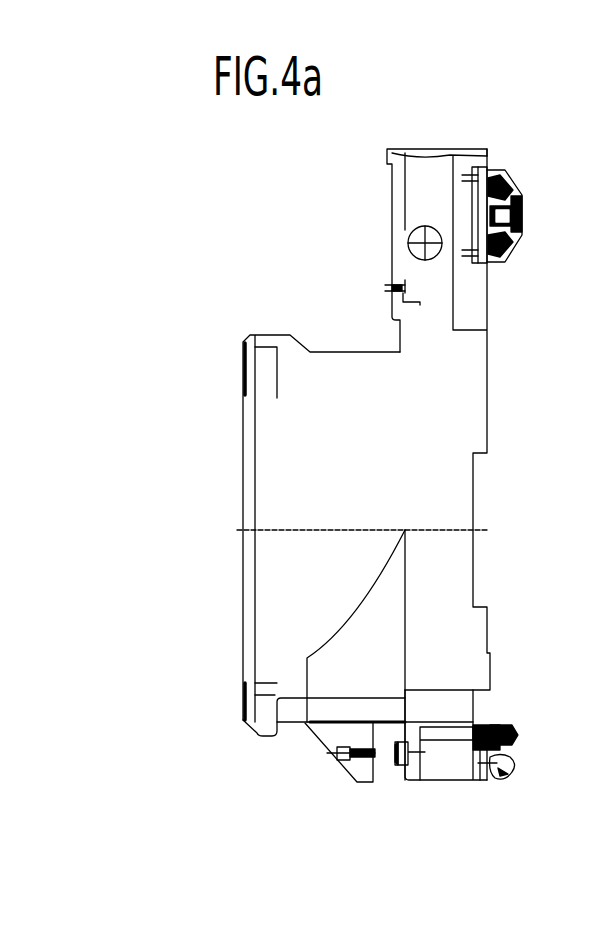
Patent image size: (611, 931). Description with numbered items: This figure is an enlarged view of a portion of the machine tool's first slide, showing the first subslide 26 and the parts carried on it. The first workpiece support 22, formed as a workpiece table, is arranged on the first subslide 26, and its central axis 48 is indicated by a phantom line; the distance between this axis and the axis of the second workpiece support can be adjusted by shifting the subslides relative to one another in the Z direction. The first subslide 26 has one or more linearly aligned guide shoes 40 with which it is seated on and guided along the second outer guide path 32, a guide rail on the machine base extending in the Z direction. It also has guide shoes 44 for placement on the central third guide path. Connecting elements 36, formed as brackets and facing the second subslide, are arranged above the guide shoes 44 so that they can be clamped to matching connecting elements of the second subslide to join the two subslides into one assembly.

The first workpiece support 22 is at (277, 472).
The first subslide 26 is at (217, 347).
The second outer guide path 32 is at (508, 205).
The connecting elements 36 is at (310, 738).
The guide shoes 40 is at (480, 307).
The guide shoes 44 is at (490, 772).
The central axis 48 is at (440, 529).